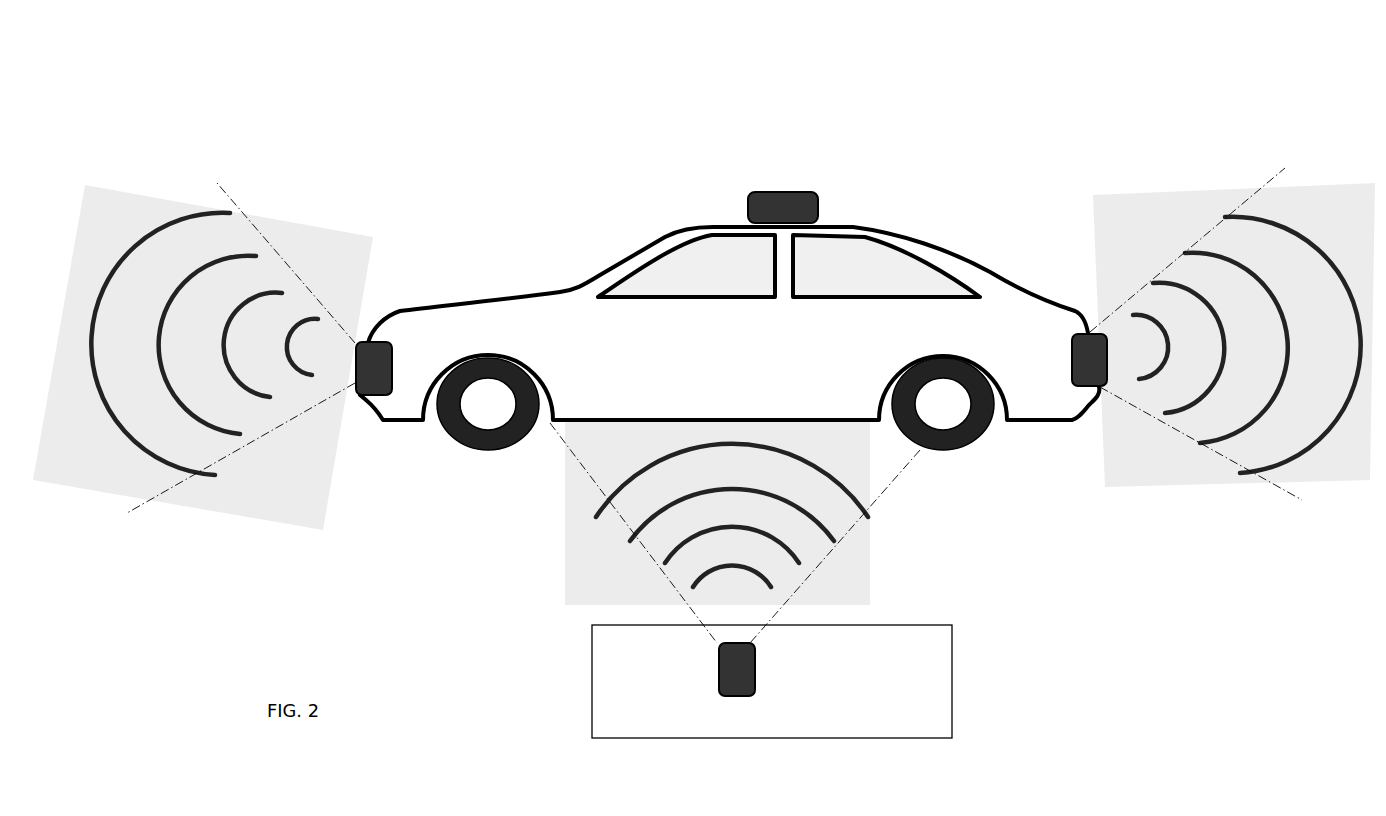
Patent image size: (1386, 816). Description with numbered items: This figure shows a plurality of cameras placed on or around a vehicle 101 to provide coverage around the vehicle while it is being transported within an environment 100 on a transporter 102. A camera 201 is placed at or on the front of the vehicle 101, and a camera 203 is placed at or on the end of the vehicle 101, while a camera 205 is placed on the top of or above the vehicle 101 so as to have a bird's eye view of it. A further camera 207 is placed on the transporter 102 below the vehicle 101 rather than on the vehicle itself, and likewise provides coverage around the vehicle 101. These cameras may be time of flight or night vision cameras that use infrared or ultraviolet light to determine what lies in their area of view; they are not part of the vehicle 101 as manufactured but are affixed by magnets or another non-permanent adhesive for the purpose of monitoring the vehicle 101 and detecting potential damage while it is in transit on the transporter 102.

The environment 100 is at (704, 399).
The vehicle 101 is at (510, 335).
The transporter 102 is at (772, 681).
The camera 201 is at (372, 367).
The camera 203 is at (1091, 373).
The camera 205 is at (773, 212).
The camera 207 is at (733, 660).